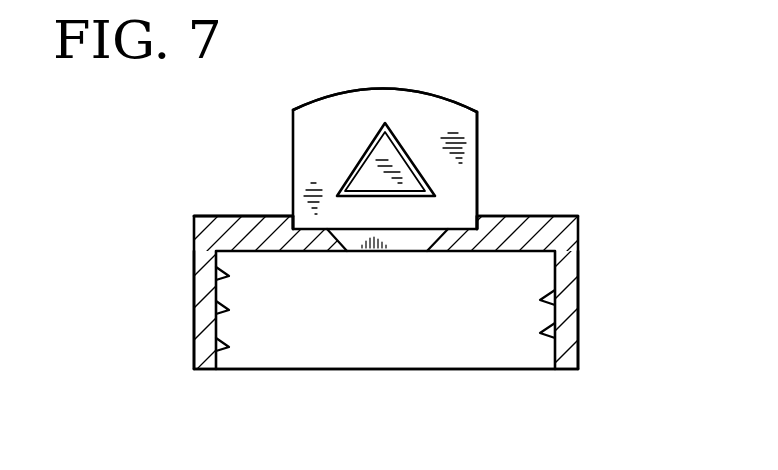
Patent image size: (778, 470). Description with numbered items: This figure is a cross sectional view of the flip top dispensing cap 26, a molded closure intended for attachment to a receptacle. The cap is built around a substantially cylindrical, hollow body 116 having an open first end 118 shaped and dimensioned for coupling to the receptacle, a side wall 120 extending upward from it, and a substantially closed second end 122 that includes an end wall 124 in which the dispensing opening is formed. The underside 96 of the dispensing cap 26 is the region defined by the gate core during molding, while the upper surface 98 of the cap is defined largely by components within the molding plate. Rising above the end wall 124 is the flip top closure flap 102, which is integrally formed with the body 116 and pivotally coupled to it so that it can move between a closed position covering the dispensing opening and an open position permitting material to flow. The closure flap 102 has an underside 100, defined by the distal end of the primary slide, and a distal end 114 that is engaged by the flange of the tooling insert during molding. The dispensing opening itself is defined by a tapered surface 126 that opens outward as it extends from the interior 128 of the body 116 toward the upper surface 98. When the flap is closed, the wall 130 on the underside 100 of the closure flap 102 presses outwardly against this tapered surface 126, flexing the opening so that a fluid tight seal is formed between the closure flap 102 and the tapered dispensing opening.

The flip top dispensing cap 26 is at (606, 196).
The underside 96 is at (242, 325).
The upper surface 98 is at (218, 212).
The underside 100 is at (328, 115).
The flip top closure flap 102 is at (457, 103).
The distal end 114 is at (385, 88).
The body 116 is at (195, 292).
The open first end 118 is at (473, 373).
The side wall 120 is at (578, 293).
The substantially closed second end 122 is at (522, 215).
The end wall 124 is at (267, 215).
The tapered surface 126 is at (432, 242).
The interior 128 is at (268, 247).
The wall 130 is at (352, 172).